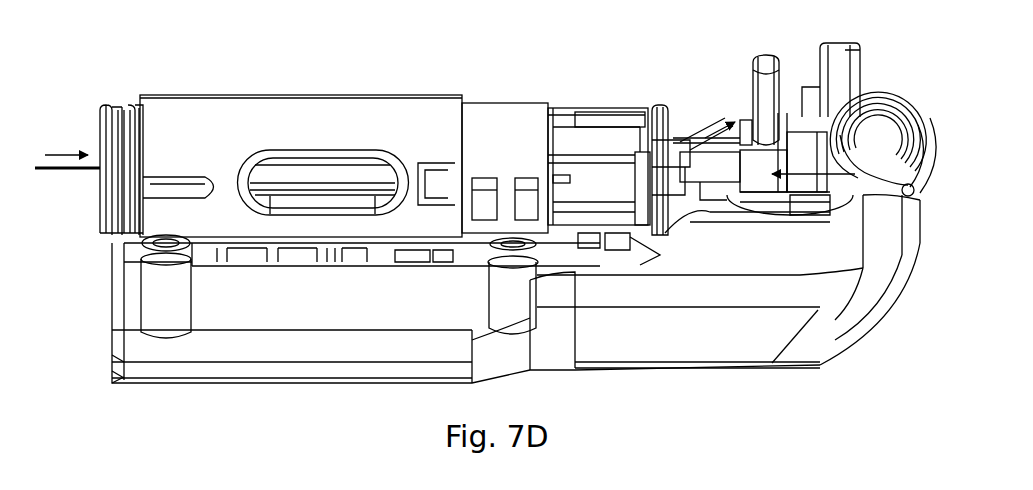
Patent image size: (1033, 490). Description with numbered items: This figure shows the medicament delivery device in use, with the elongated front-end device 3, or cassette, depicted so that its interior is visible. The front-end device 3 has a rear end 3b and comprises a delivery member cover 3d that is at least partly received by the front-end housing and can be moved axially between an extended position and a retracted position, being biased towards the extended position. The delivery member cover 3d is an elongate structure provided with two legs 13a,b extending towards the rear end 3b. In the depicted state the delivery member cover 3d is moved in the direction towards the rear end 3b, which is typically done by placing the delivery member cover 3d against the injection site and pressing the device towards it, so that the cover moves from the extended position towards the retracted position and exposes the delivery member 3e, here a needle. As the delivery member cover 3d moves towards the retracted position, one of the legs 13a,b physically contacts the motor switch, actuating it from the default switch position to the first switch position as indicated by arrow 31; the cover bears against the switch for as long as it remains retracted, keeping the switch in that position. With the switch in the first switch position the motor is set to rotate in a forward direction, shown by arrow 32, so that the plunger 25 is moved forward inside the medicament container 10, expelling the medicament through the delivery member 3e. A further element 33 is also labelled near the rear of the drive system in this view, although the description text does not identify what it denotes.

The front-end device 3 is at (292, 82).
The rear end 3b is at (655, 98).
The delivery member cover 3d is at (118, 105).
The delivery member 3e is at (68, 170).
The medicament container 10 is at (665, 105).
The legs 13a,b is at (618, 230).
The plunger 25 is at (805, 185).
The arrow 31 is at (652, 252).
The arrow 32 is at (710, 136).
The coil spring 33 is at (858, 115).